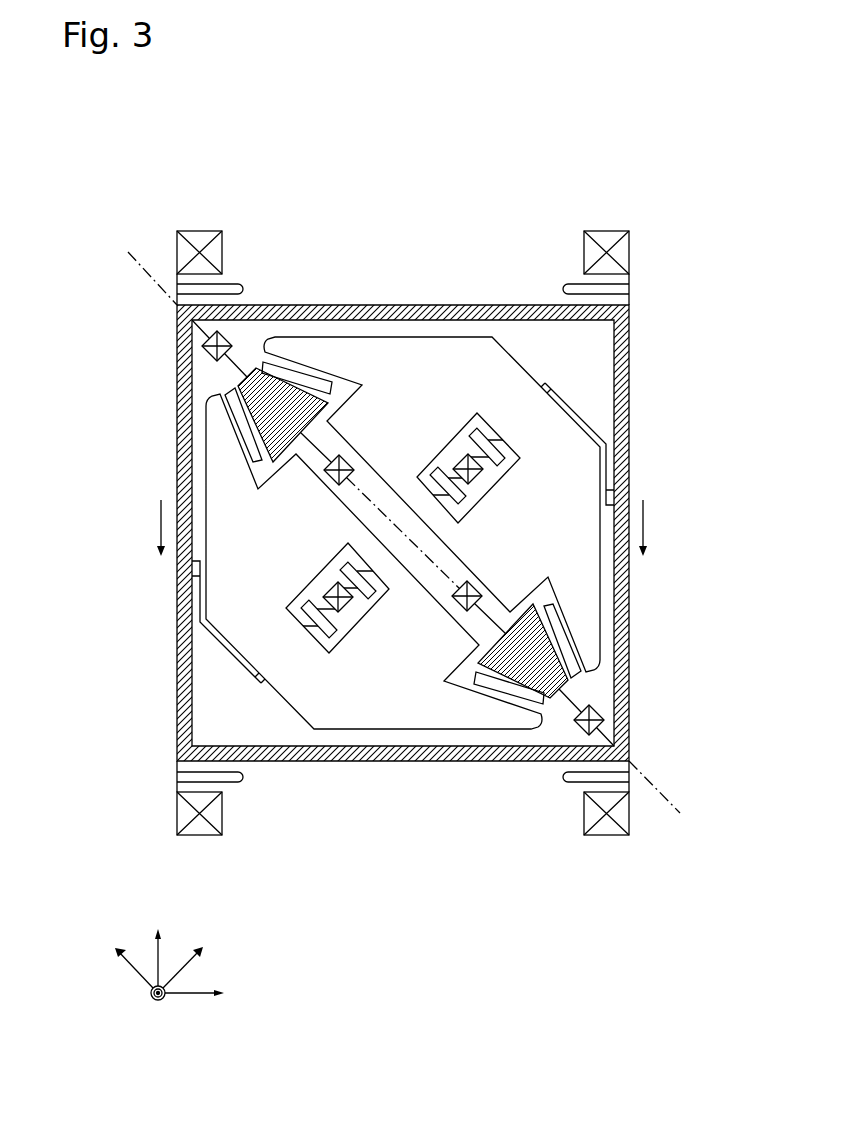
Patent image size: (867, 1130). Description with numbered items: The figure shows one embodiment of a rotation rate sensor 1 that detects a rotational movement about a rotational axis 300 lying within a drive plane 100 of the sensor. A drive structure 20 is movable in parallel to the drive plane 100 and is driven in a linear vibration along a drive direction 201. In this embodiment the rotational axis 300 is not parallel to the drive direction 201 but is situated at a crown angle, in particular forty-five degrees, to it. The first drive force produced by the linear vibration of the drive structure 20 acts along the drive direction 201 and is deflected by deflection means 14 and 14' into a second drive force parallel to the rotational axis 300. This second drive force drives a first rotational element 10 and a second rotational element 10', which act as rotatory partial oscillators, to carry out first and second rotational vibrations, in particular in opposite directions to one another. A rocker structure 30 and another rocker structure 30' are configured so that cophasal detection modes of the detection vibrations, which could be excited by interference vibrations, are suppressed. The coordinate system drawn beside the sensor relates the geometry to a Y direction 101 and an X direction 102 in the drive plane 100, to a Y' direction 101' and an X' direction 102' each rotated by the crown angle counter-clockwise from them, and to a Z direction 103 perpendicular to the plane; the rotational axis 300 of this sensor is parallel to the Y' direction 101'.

The rotation rate sensor 1 is at (116, 184).
The first rotational element 10 is at (324, 561).
The second rotational element 10' is at (483, 504).
The deflection means 14 is at (185, 623).
The deflection means 14' is at (622, 444).
The drive structure 20 is at (618, 461).
The rocker structure 30 is at (585, 658).
The another rocker structure 30' is at (217, 408).
The drive plane 100 is at (245, 899).
The Y direction 101 is at (125, 947).
The Y' direction 101' is at (105, 973).
The X direction 102 is at (194, 1023).
The X' direction 102' is at (214, 967).
The Z direction 103 is at (151, 1001).
The drive direction 201 is at (161, 527).
The rotational axis 300 is at (673, 807).